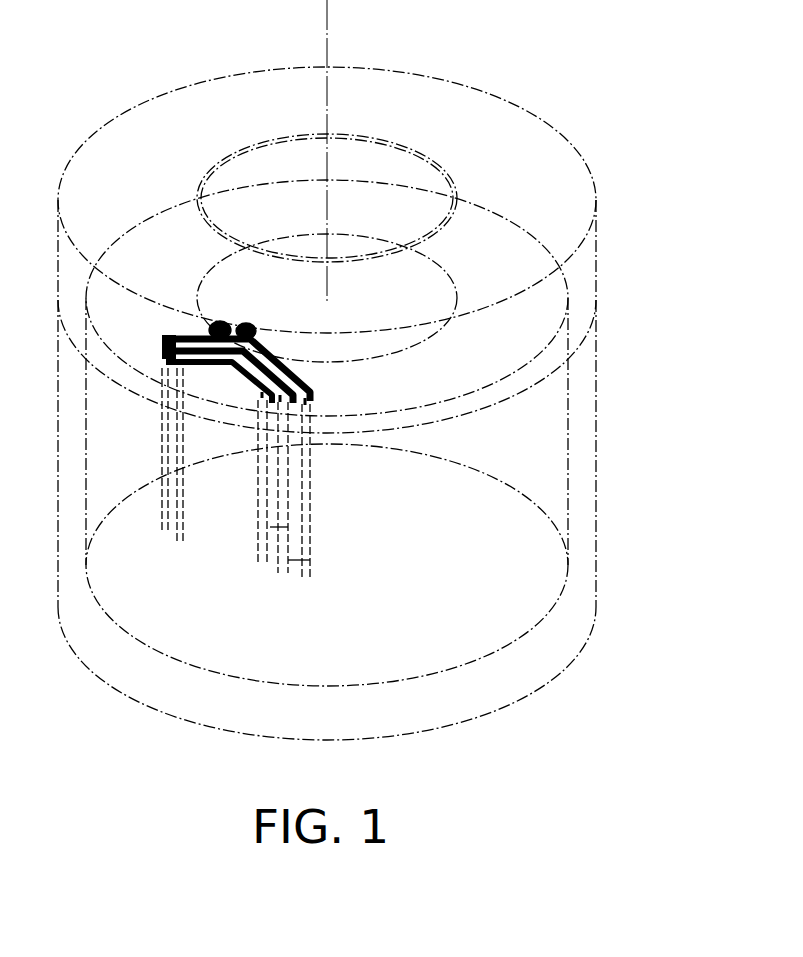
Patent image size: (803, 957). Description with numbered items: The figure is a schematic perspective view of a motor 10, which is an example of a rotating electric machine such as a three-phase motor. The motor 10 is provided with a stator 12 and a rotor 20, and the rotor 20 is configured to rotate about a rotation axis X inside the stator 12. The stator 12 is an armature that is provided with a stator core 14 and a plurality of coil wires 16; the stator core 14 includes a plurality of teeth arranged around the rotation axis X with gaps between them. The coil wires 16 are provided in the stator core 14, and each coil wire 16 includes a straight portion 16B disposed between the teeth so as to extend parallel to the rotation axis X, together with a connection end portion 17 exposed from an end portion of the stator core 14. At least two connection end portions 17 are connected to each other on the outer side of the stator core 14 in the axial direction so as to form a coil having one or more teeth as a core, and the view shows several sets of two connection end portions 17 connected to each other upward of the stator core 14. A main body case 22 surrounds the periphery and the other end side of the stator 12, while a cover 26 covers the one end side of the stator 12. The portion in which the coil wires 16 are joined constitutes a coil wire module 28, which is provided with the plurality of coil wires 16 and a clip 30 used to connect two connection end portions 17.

The rotation axis X is at (328, 32).
The motor 10 is at (493, 80).
The stator 12 is at (568, 423).
The stator core 14 is at (557, 458).
The coil wires 16 is at (288, 557).
The straight portion 16B is at (313, 487).
The connection end portion 17 is at (184, 332).
The rotor 20 is at (438, 164).
The main body case 22 is at (595, 508).
The cover 26 is at (597, 258).
The coil wire module 28 is at (281, 345).
The clip 30 is at (257, 328).